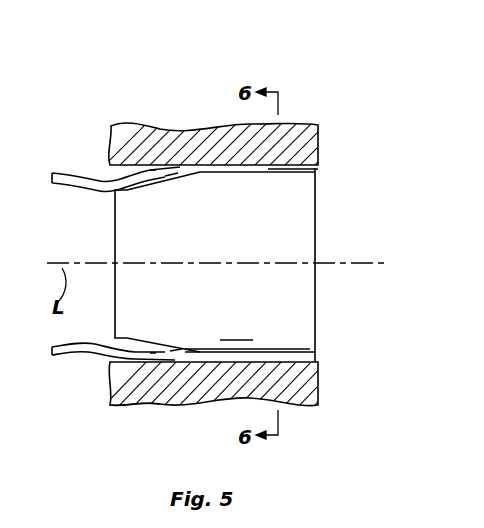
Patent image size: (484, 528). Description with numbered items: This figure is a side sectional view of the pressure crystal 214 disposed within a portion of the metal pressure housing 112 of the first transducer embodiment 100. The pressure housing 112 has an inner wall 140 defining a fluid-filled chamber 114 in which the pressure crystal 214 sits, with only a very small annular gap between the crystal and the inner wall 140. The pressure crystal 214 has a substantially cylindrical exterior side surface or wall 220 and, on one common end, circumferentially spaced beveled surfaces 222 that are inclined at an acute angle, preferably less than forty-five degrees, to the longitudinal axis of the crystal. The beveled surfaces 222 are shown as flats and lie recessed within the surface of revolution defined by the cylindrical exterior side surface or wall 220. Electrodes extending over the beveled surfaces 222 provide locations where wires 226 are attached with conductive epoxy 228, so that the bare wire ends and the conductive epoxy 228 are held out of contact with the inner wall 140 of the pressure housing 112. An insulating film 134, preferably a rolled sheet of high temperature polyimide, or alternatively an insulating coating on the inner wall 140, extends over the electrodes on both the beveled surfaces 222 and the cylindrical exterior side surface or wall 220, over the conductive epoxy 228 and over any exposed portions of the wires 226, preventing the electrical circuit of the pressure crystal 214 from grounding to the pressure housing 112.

The pressure and temperature transducer 100 is at (322, 76).
The chamber 114 is at (320, 133).
The pressure housing 112 is at (125, 404).
The inner wall 140 is at (270, 170).
The pressure crystal 214 is at (330, 236).
The insulating film 134 is at (290, 340).
The cylindrical exterior side surface or wall 220 is at (320, 368).
The wires 226 is at (73, 192).
The conductive epoxy 228 is at (155, 173).
The beveled surfaces 222 is at (172, 172).